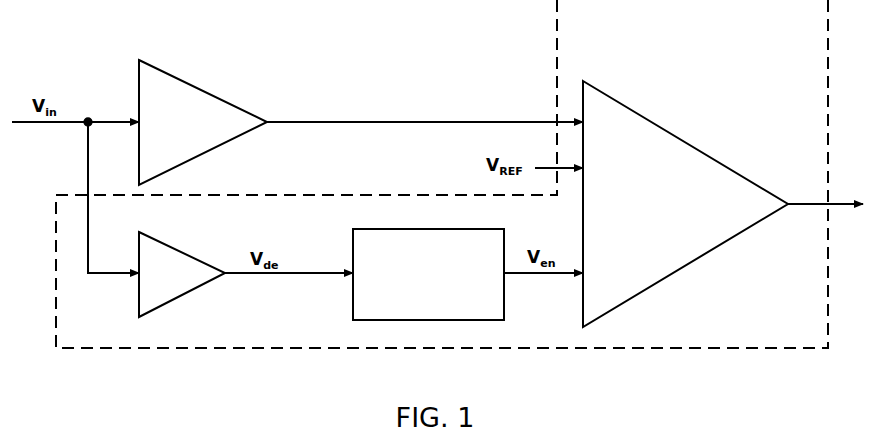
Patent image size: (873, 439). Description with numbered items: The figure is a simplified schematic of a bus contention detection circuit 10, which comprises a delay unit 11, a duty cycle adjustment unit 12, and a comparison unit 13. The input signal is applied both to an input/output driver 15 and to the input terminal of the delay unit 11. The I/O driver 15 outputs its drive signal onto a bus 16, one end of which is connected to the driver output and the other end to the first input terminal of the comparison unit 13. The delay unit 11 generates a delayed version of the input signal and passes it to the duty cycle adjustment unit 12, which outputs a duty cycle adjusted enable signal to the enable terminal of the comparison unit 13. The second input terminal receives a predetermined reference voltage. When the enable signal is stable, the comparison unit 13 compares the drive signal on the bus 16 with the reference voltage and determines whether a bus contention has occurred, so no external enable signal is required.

The bus contention detection circuit 10 is at (597, 36).
The delay unit 11 is at (163, 248).
The duty cycle adjustment unit 12 is at (388, 243).
The comparison unit 13 is at (675, 170).
The I/O driver 15 is at (220, 100).
The bus 16 is at (397, 122).